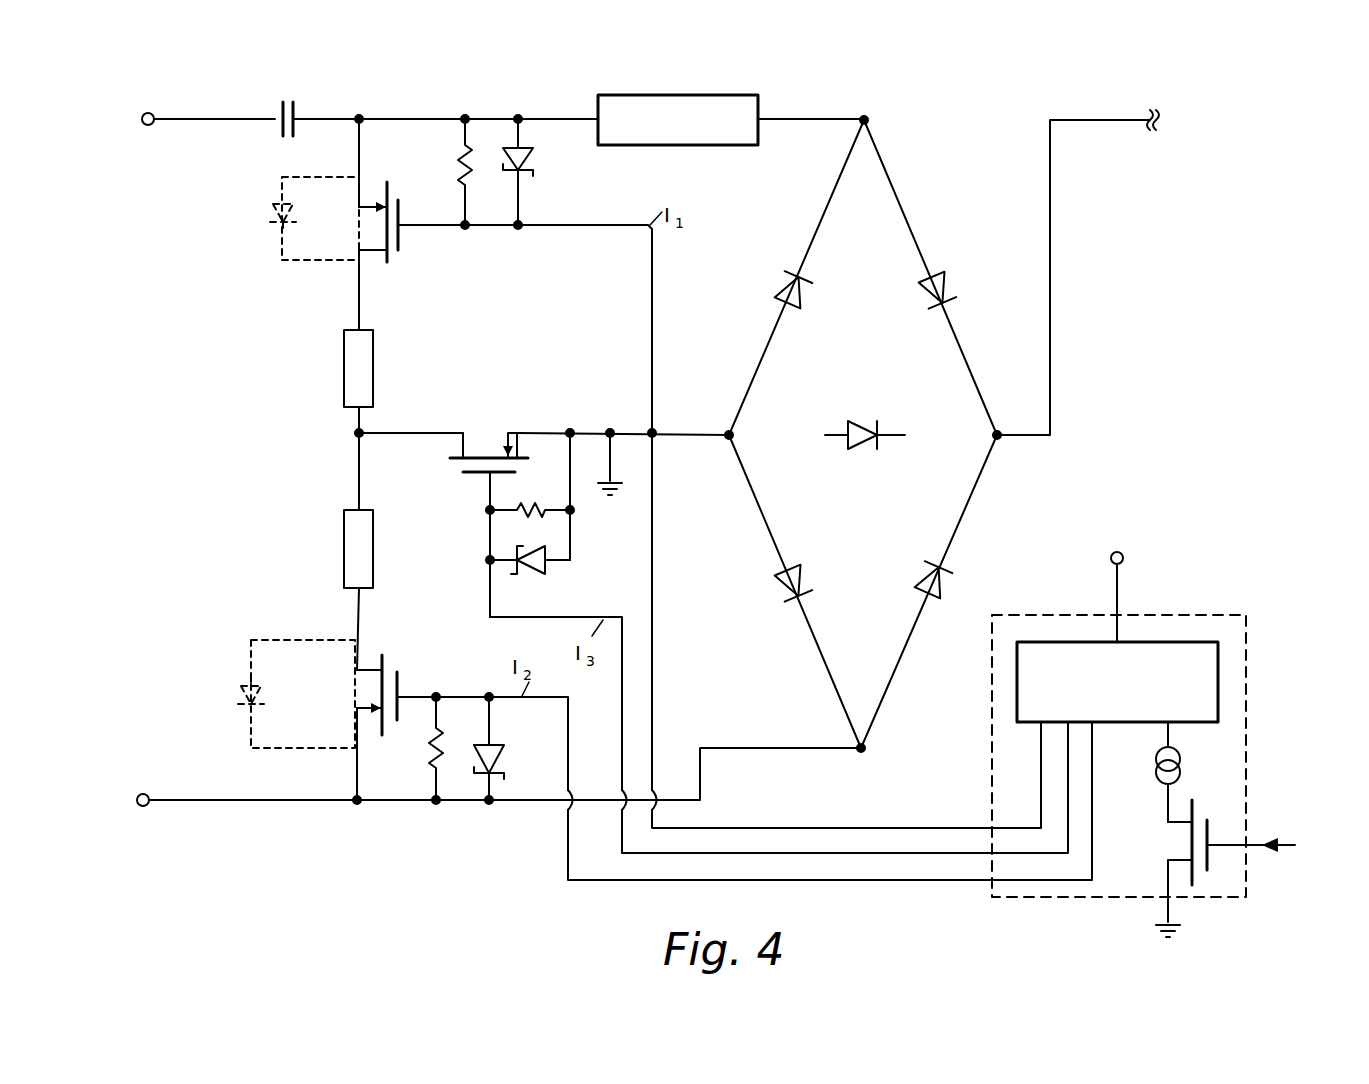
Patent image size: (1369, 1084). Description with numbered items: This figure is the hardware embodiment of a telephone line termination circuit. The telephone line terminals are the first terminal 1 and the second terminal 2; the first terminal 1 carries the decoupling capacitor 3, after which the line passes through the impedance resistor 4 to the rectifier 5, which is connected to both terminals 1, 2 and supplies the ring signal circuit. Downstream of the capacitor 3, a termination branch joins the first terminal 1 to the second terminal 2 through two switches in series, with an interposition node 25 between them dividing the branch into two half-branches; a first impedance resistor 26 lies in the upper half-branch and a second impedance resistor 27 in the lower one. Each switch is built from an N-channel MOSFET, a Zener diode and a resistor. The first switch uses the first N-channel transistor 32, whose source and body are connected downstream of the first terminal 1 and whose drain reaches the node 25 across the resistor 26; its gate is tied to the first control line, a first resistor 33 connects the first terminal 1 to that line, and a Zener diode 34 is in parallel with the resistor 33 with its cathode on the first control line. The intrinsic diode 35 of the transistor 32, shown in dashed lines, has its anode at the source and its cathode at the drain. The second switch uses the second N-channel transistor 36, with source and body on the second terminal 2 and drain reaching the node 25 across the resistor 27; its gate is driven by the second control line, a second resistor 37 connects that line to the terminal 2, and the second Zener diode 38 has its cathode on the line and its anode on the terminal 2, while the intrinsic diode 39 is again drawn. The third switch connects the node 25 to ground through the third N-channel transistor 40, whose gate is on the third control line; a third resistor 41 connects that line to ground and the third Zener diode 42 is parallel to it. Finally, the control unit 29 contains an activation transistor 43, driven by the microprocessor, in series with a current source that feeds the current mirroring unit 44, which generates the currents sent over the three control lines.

The first terminal 1 is at (186, 120).
The second terminal 2 is at (210, 800).
The decoupling capacitor 3 is at (300, 116).
The impedance resistor 4 is at (744, 132).
The rectifier 5 is at (958, 216).
The interposition node 25 is at (352, 439).
The first impedance resistor 26 is at (374, 365).
The second impedance resistor 27 is at (374, 560).
The control unit 29 is at (1160, 731).
The first N-channel transistor 32 is at (405, 233).
The first resistor 33 is at (462, 160).
The Zener diode 34 is at (530, 160).
The intrinsic diode 35 is at (268, 226).
The second N-channel transistor 36 is at (388, 662).
The second resistor 37 is at (428, 748).
The second Zener diode 38 is at (500, 763).
The intrinsic diode 39 is at (236, 712).
The third N-channel transistor 40 is at (487, 450).
The third resistor 41 is at (531, 504).
The third Zener diode 42 is at (540, 568).
The activation transistor 43 is at (1210, 832).
The current mirroring unit 44 is at (1193, 677).